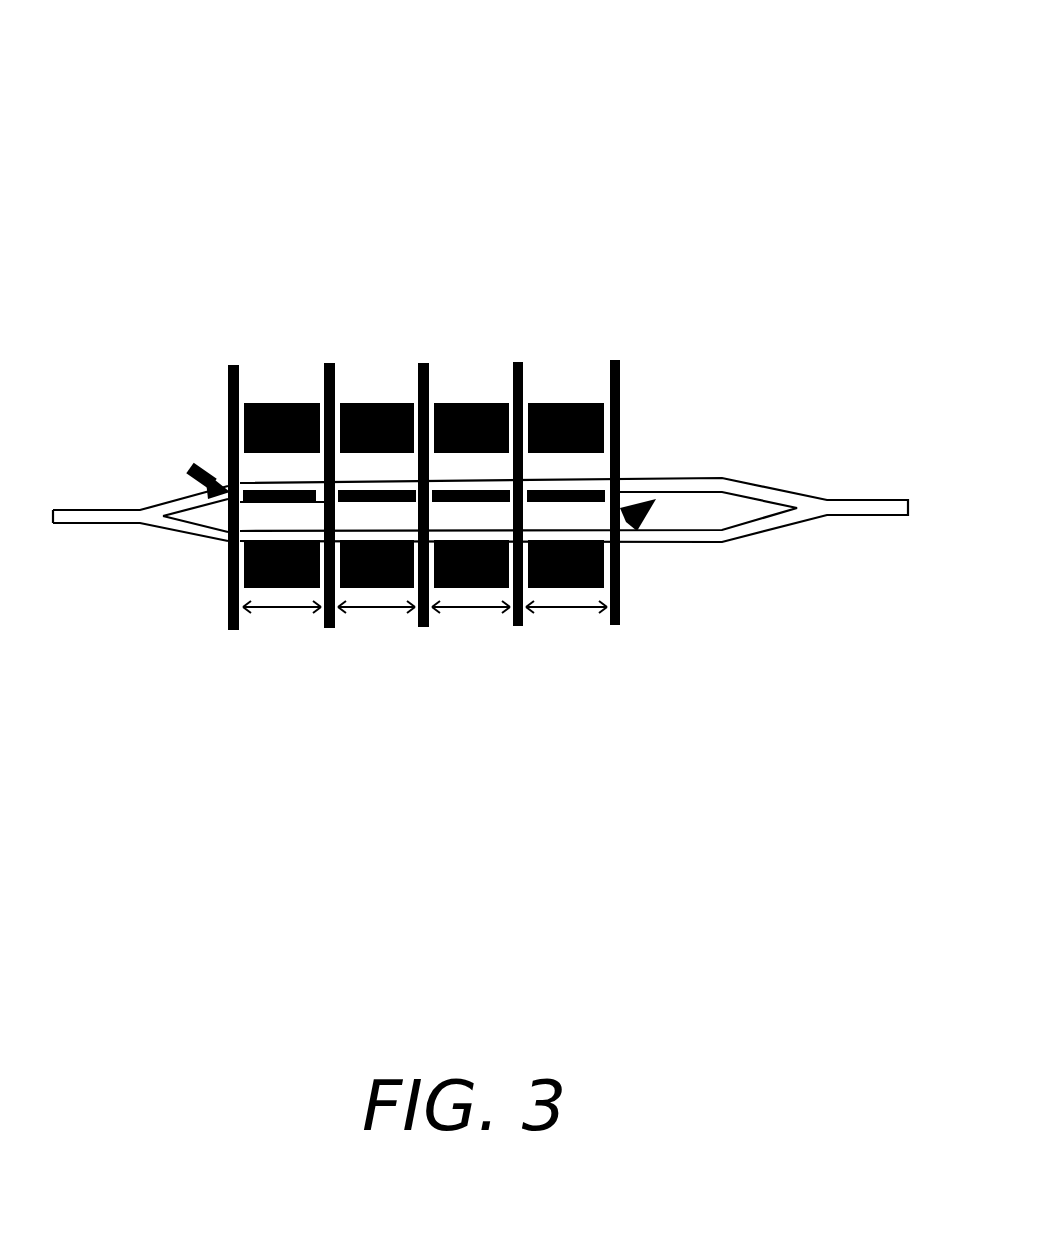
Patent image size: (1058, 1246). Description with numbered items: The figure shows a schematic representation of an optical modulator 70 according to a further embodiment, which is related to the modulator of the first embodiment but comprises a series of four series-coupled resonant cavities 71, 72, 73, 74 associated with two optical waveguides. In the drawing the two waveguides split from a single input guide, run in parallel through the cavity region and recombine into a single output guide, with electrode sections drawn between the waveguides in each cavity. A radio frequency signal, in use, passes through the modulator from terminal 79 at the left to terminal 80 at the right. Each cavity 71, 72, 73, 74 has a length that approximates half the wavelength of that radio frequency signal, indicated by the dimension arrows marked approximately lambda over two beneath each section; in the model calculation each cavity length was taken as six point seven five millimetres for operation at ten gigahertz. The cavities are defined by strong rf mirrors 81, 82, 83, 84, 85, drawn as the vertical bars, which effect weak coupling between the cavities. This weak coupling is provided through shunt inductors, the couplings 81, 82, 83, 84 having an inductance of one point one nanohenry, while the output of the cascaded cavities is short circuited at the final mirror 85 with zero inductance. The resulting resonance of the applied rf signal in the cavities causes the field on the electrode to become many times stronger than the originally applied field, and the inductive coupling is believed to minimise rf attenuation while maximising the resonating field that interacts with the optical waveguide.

The optical modulator 70 is at (536, 146).
The resonant cavity 71 is at (277, 370).
The resonant cavity 72 is at (372, 370).
The resonant cavity 73 is at (460, 367).
The resonant cavity 74 is at (552, 364).
The terminal 79 is at (188, 455).
The terminal 80 is at (656, 520).
The rf mirror 81 is at (231, 363).
The rf mirror 82 is at (330, 363).
The rf mirror 83 is at (427, 363).
The rf mirror 84 is at (521, 362).
The rf mirror 85 is at (617, 358).